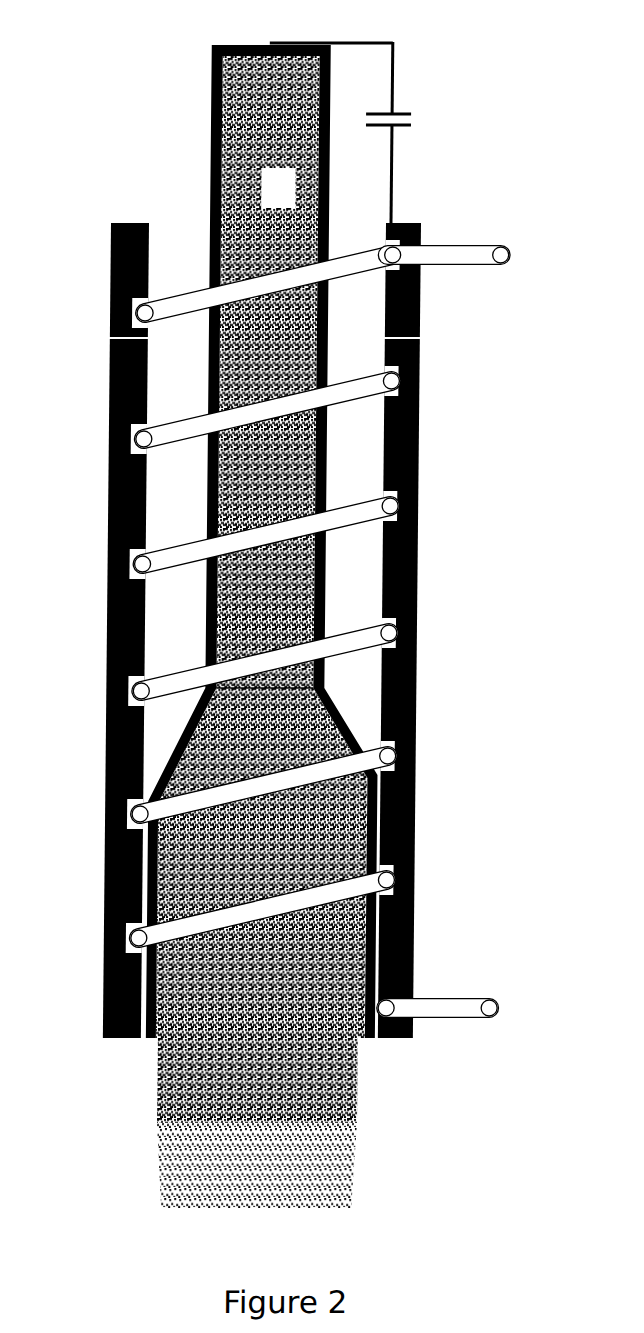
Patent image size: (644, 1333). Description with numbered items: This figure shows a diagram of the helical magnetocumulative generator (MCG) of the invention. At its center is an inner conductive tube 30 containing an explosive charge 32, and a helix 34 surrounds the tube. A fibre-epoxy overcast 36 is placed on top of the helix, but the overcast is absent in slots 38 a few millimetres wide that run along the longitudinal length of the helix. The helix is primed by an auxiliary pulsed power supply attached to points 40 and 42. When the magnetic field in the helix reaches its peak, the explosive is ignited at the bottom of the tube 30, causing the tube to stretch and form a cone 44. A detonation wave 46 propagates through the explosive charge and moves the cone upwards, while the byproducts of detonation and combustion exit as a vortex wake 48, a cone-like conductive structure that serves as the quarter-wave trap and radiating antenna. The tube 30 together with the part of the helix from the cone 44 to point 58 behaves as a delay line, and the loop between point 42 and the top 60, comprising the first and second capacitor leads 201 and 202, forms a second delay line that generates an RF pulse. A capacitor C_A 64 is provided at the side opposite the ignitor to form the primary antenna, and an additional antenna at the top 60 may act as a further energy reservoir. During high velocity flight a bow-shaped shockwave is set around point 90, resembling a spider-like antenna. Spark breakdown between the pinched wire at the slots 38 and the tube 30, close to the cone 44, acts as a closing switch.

The top 60 is at (331, 31).
The second capacitor lead 202 is at (388, 94).
The capacitor C_A 64 is at (409, 108).
The first capacitor lead 201 is at (389, 177).
The point 90 is at (278, 188).
The explosive charge 32 is at (254, 348).
The inner conductive tube 30 is at (203, 480).
The detonation wave 46 is at (263, 677).
The fibre-epoxy overcast 36 is at (104, 613).
The helix 34 is at (104, 660).
The cone 44 is at (170, 742).
The slots 38 is at (414, 620).
The point 40 is at (459, 1008).
The point 42 is at (462, 255).
The point 58 is at (416, 272).
The vortex wake 48 is at (164, 1137).